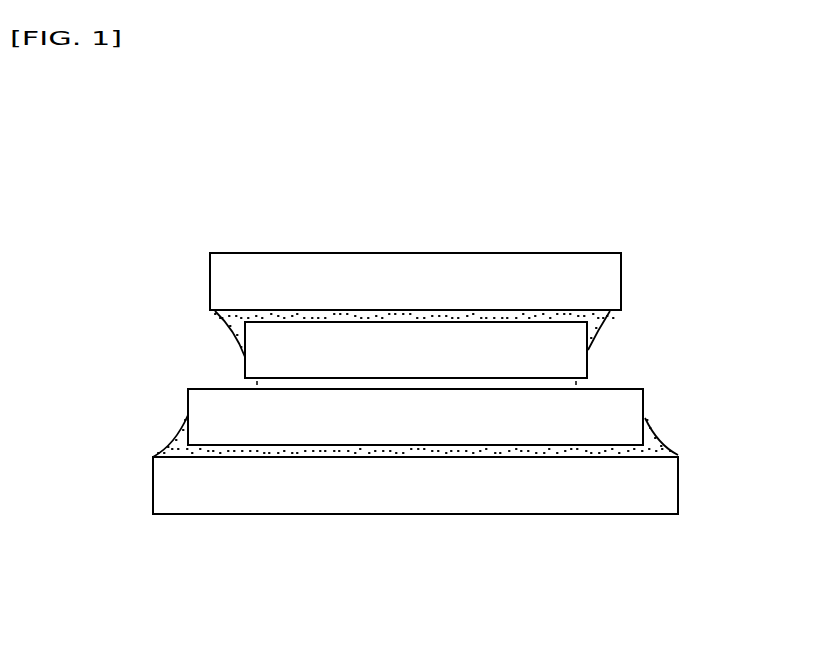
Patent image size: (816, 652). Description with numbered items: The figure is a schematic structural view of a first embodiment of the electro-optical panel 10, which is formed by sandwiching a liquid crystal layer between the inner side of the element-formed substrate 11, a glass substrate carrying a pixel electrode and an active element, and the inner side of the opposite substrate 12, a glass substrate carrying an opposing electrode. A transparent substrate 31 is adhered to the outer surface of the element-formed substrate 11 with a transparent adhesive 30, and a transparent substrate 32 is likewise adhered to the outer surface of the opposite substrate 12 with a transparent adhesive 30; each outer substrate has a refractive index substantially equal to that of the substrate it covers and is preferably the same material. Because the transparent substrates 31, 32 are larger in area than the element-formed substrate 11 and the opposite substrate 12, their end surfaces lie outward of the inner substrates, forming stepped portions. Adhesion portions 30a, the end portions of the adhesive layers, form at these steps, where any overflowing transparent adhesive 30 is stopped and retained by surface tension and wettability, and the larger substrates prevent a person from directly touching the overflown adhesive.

The electro-optical panel 10 is at (172, 378).
The element-formed substrate 11 is at (645, 398).
The opposite substrate 12 is at (590, 357).
The transparent adhesive 30 is at (472, 308).
The adhesion portions 30a is at (233, 326).
The transparent substrate 31 is at (343, 515).
The transparent substrate 32 is at (335, 252).